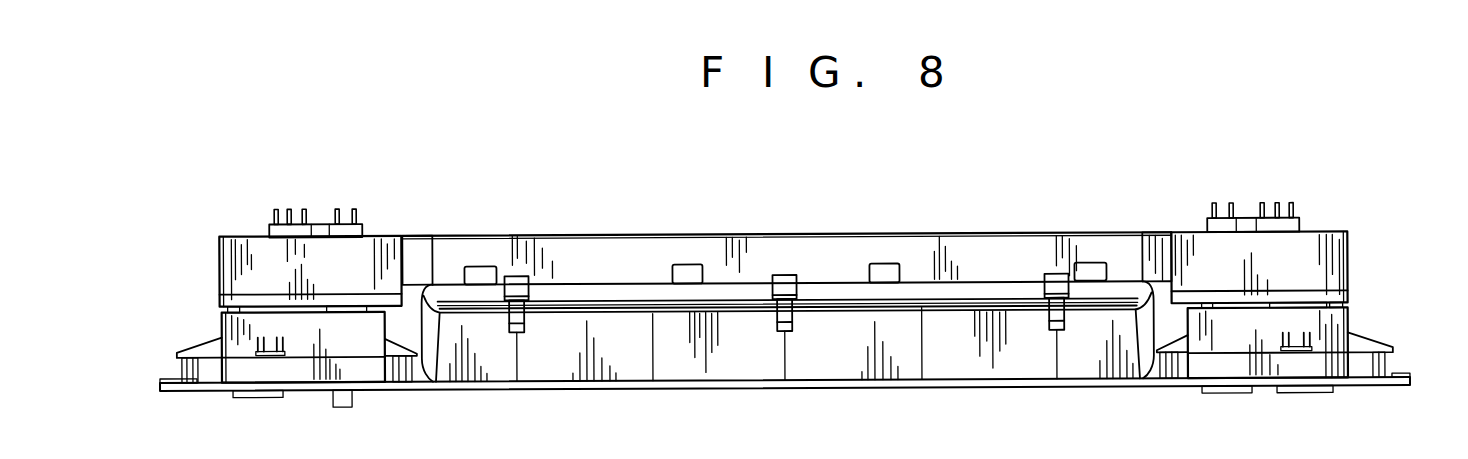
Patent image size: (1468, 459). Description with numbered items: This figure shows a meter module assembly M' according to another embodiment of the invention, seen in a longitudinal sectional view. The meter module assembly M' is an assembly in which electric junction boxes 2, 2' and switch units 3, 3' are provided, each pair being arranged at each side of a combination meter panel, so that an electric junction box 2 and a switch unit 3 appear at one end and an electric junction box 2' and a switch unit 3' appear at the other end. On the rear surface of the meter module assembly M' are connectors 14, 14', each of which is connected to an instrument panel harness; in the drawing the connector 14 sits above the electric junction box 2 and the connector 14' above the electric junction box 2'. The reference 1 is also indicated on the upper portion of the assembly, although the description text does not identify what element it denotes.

The main circuit board 1 is at (827, 233).
The meter module assembly M' is at (787, 253).
The electric junction box 2 is at (282, 274).
The switch unit 3 is at (282, 337).
The connector 14 is at (279, 206).
The electric junction box 2' is at (1285, 264).
The switch unit 3' is at (1283, 334).
The connector 14' is at (1275, 191).